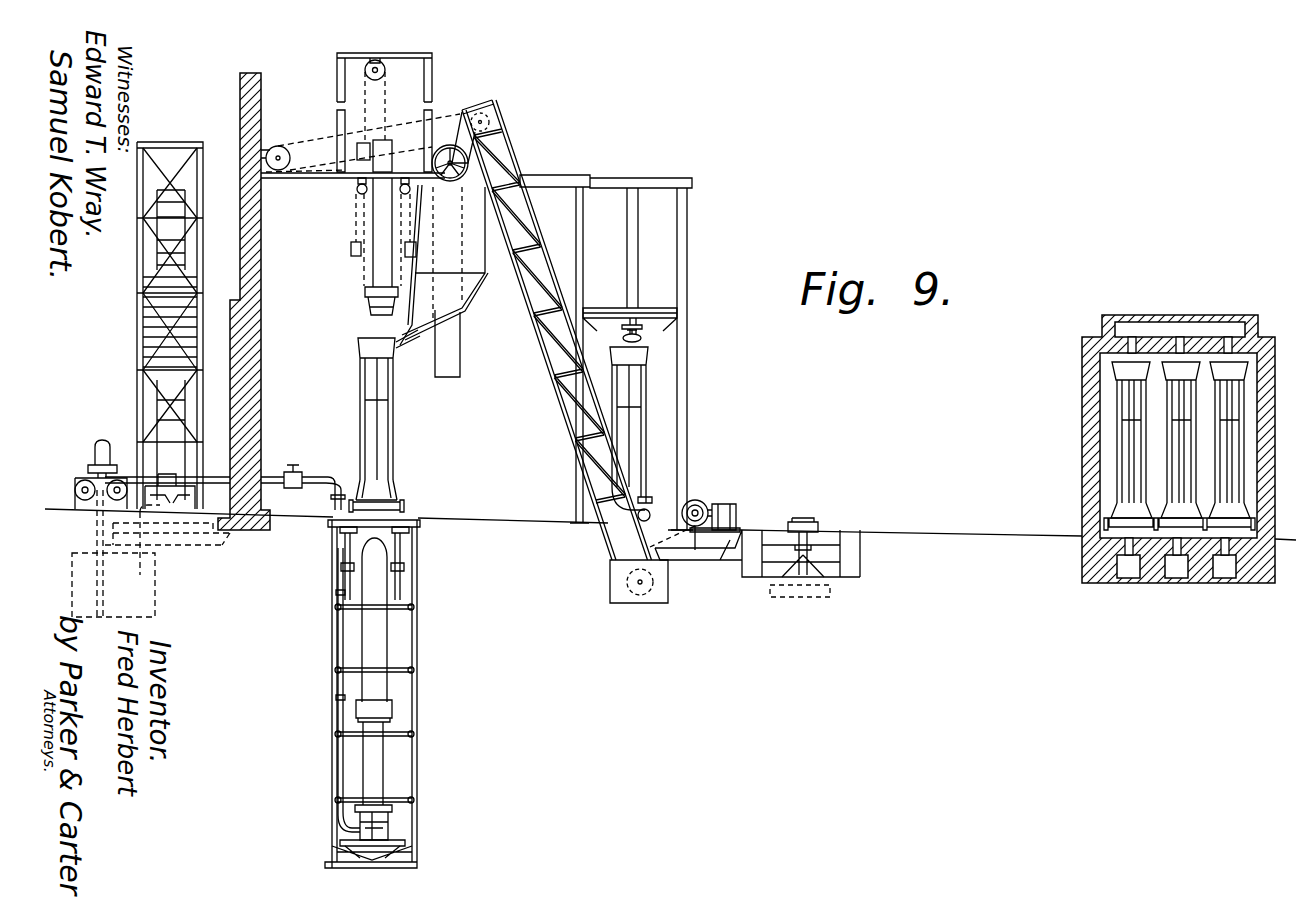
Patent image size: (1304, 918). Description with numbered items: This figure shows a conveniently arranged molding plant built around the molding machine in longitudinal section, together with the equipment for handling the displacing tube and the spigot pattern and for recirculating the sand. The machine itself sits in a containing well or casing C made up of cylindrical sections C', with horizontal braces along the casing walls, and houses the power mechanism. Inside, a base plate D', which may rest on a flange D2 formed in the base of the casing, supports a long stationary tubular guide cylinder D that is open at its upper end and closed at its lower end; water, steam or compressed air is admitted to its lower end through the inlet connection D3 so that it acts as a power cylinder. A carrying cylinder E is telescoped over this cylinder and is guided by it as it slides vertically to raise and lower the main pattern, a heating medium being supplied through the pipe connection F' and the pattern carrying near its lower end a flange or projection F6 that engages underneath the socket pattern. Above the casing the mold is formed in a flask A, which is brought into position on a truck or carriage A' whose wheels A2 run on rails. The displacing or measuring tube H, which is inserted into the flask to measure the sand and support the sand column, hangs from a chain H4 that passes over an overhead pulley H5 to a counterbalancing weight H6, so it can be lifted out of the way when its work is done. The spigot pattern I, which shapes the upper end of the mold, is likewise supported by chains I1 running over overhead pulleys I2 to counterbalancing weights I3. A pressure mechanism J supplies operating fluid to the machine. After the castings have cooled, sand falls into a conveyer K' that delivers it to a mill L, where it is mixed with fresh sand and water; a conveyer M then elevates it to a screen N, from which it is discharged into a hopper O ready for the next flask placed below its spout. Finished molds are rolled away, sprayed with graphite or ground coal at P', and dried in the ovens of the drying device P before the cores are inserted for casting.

The flask A is at (803, 416).
The truck or carriage A' is at (803, 535).
The wheels A2 is at (348, 503).
The containing well or casing C is at (361, 694).
The cylindrical sections C' is at (413, 697).
The stationary tubular guide cylinder D is at (403, 822).
The base plate D' is at (336, 827).
The flange D2 is at (336, 851).
The inlet connection D3 is at (338, 767).
The carrying cylinder E is at (376, 755).
The pipe connection F' is at (408, 620).
The flange or projection F6 is at (383, 708).
The displacing or measuring tube H is at (376, 270).
The chain H4 is at (367, 112).
The overhead pulley H5 is at (368, 76).
The counterbalancing weight H6 is at (356, 150).
The spigot pattern I is at (374, 302).
The chains I1 is at (398, 225).
The overhead pulleys I2 is at (400, 188).
The counterbalancing weights I3 is at (406, 250).
The pressure mechanism J is at (149, 325).
The conveyer K' is at (719, 514).
The mill L is at (690, 570).
The conveyer M is at (556, 396).
The screen N is at (457, 163).
The hopper O is at (472, 282).
The drying device P is at (1152, 449).
The spraying station P' is at (678, 336).